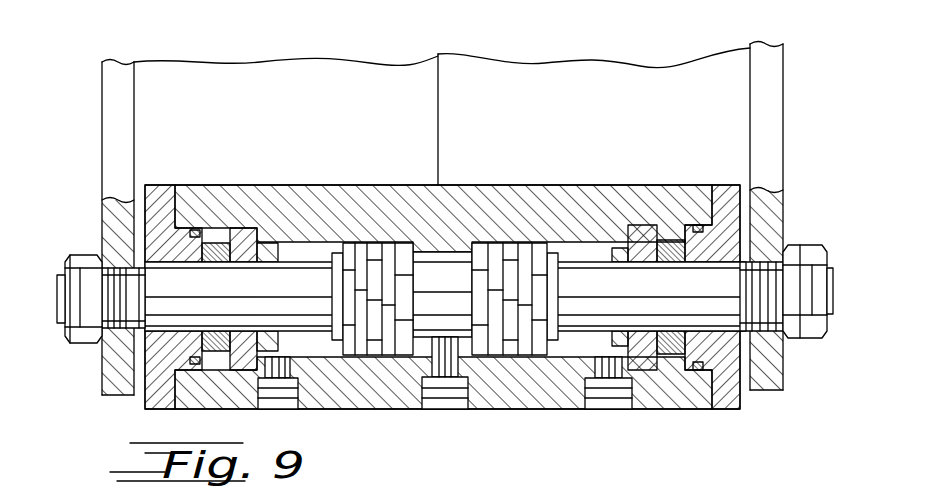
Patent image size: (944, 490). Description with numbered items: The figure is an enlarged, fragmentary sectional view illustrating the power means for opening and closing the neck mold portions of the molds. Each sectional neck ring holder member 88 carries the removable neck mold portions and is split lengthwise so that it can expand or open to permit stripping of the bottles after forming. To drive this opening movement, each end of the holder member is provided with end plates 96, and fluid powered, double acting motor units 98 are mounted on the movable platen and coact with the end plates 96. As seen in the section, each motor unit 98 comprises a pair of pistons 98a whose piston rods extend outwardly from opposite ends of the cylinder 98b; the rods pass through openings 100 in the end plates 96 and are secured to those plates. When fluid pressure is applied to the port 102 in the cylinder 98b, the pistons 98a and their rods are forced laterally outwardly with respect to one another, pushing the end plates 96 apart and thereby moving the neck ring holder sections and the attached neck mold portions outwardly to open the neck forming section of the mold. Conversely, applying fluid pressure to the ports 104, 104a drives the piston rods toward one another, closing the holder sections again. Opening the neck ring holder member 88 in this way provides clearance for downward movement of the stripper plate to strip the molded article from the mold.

The neck ring holder member 88 is at (655, 90).
The end plates 96 is at (118, 94).
The fluid powered double acting motor units 98 is at (616, 180).
The pistons 98a is at (377, 290).
The cylinder 98b is at (658, 192).
The openings 100 is at (112, 278).
The port 102 is at (461, 397).
The port 104 is at (290, 402).
The port 104a is at (617, 395).